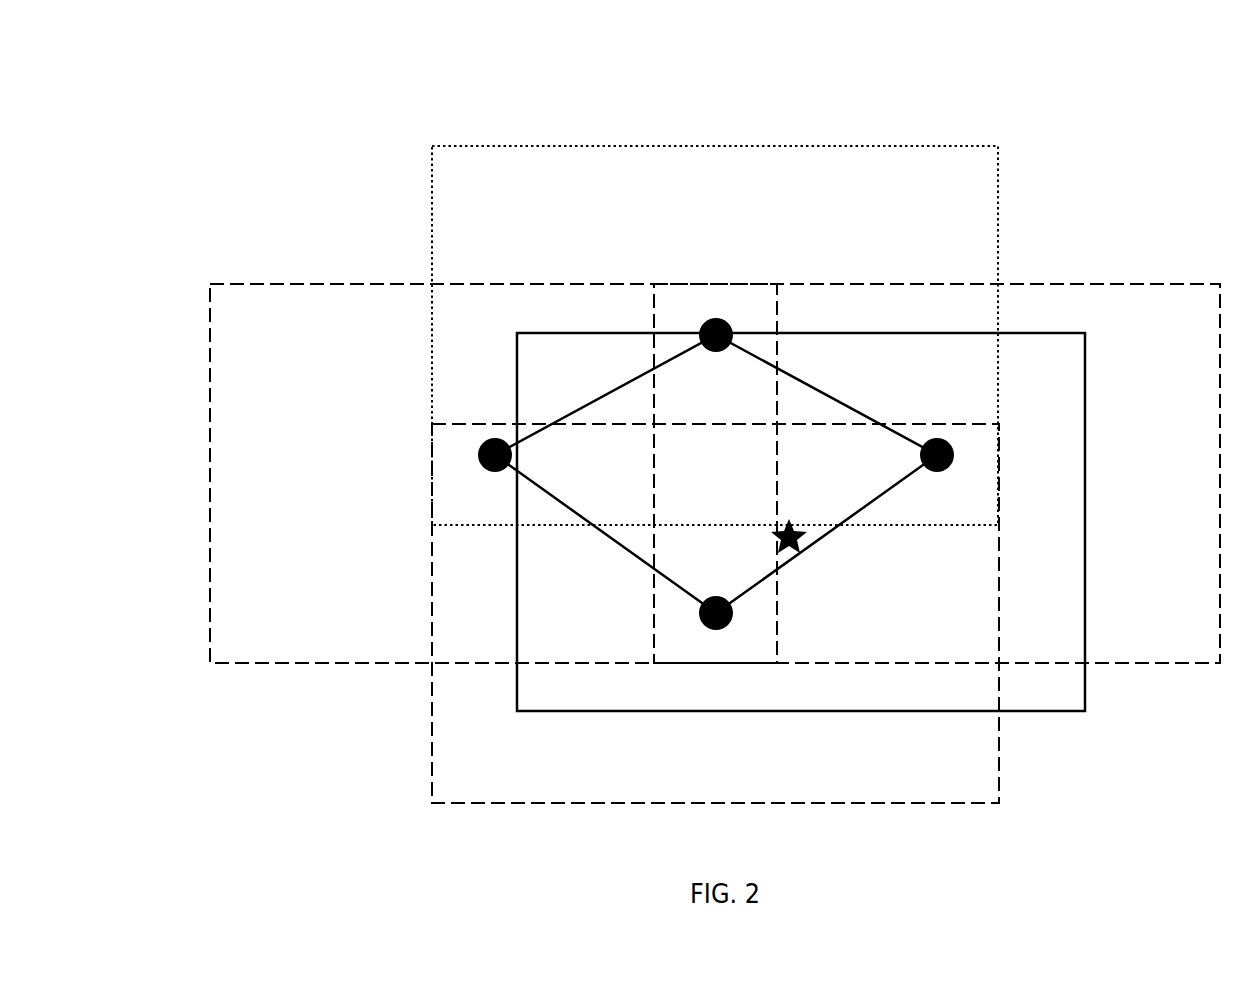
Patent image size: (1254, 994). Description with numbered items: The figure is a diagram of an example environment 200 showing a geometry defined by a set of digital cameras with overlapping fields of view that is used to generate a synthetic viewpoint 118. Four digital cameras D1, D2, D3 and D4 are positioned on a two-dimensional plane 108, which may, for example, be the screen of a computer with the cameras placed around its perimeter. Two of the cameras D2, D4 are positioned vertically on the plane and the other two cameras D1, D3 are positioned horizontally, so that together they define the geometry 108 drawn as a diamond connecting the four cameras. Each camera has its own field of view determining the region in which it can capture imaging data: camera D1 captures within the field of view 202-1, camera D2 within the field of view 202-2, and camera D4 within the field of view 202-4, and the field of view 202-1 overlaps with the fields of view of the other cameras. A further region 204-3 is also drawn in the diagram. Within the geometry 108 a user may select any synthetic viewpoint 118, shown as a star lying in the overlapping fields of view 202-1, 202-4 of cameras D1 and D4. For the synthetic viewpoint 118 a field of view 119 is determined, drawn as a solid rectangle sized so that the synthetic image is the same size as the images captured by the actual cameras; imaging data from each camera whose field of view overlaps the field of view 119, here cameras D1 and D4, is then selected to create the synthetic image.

The example environment 200 is at (267, 75).
The field of view 202-1 is at (1205, 316).
The field of view 202-2 is at (982, 186).
The field of view 202-4 is at (982, 786).
The overlap region 204-3 is at (275, 316).
The two-dimensional plane 108 is at (612, 498).
The synthetic viewpoint 118 is at (812, 554).
The field of view 119 is at (1091, 708).
The digital camera D1 is at (901, 464).
The digital camera D2 is at (727, 387).
The digital camera D3 is at (556, 466).
The digital camera D4 is at (728, 581).